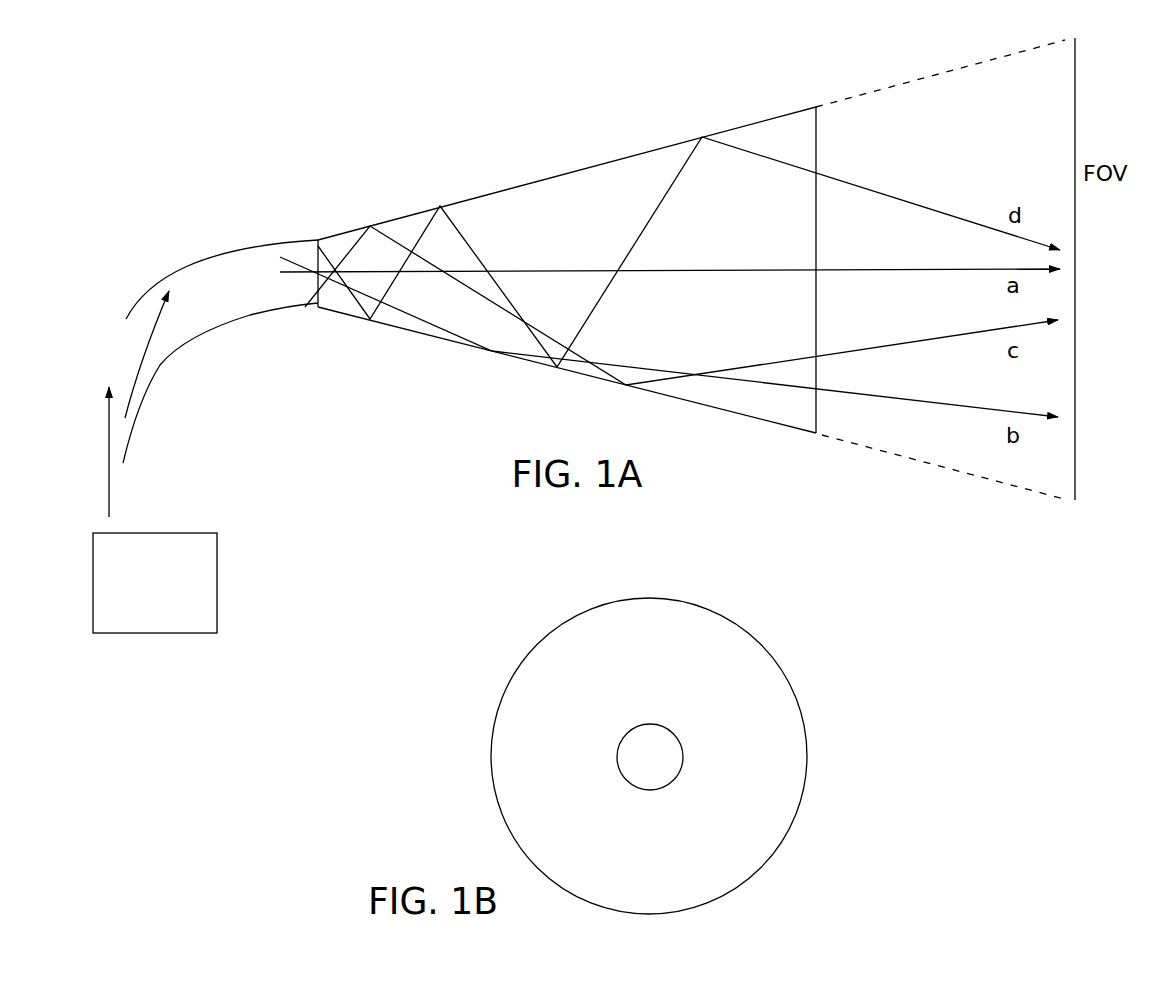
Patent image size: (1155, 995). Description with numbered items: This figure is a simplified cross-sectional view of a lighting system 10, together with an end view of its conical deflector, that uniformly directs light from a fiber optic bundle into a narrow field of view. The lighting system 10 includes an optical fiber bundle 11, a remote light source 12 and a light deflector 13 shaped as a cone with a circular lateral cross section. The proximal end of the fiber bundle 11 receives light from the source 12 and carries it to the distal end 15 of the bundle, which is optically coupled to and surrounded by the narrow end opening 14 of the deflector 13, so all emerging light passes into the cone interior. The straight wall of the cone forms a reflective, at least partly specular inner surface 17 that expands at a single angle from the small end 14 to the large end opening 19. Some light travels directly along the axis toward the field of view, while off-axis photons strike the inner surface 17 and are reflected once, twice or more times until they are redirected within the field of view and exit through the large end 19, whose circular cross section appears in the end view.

In FIG. 1A, the lighting system 10 is at (380, 125).
In FIG. 1A, the optical fiber bundle 11 is at (208, 255).
In FIG. 1A, the light source 12 is at (191, 532).
In FIG. 1A, the light deflector 13 is at (567, 241).
In FIG. 1A, the narrow end opening 14 is at (318, 310).
In FIG. 1B, the narrow end opening 14 is at (615, 760).
In FIG. 1A, the distal end of the fiber bundle 15 is at (316, 245).
In FIG. 1A, the inner surface of the cone 17 is at (634, 160).
In FIG. 1A, the large end opening 19 is at (820, 419).
In FIG. 1B, the large end opening 19 is at (524, 658).